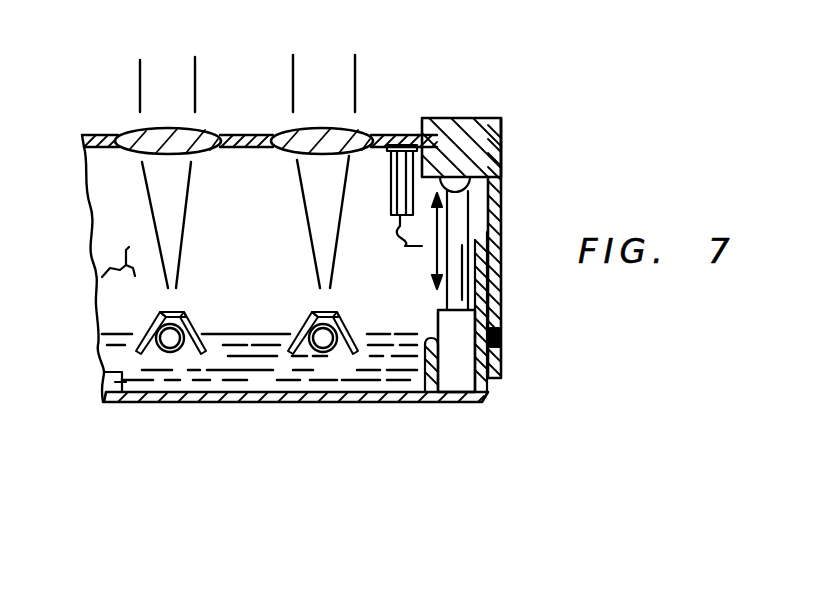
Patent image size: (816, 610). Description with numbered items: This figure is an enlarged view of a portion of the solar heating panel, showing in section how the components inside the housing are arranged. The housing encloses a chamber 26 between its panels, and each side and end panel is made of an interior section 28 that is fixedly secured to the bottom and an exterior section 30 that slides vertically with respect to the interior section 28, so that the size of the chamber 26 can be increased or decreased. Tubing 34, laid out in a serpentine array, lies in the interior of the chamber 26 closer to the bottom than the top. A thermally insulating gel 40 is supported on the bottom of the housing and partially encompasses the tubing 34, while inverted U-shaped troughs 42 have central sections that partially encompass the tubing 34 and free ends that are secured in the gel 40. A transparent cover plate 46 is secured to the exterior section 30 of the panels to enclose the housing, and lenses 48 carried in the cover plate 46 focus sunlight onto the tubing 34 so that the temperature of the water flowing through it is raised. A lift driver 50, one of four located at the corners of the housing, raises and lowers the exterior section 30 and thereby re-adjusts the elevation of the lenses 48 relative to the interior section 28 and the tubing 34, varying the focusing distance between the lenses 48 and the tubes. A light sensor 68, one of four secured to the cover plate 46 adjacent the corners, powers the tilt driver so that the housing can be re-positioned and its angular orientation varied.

The chamber 26 is at (113, 267).
The interior sections 28 is at (475, 240).
The exterior sections 30 is at (501, 200).
The tubing 34 is at (170, 352).
The gel 40 is at (115, 401).
The inverted U-shaped troughs 42 is at (302, 313).
The cover plate 46 is at (402, 145).
The lenses 48 is at (285, 130).
The lift drivers 50 is at (465, 343).
The light sensors 68 is at (501, 135).